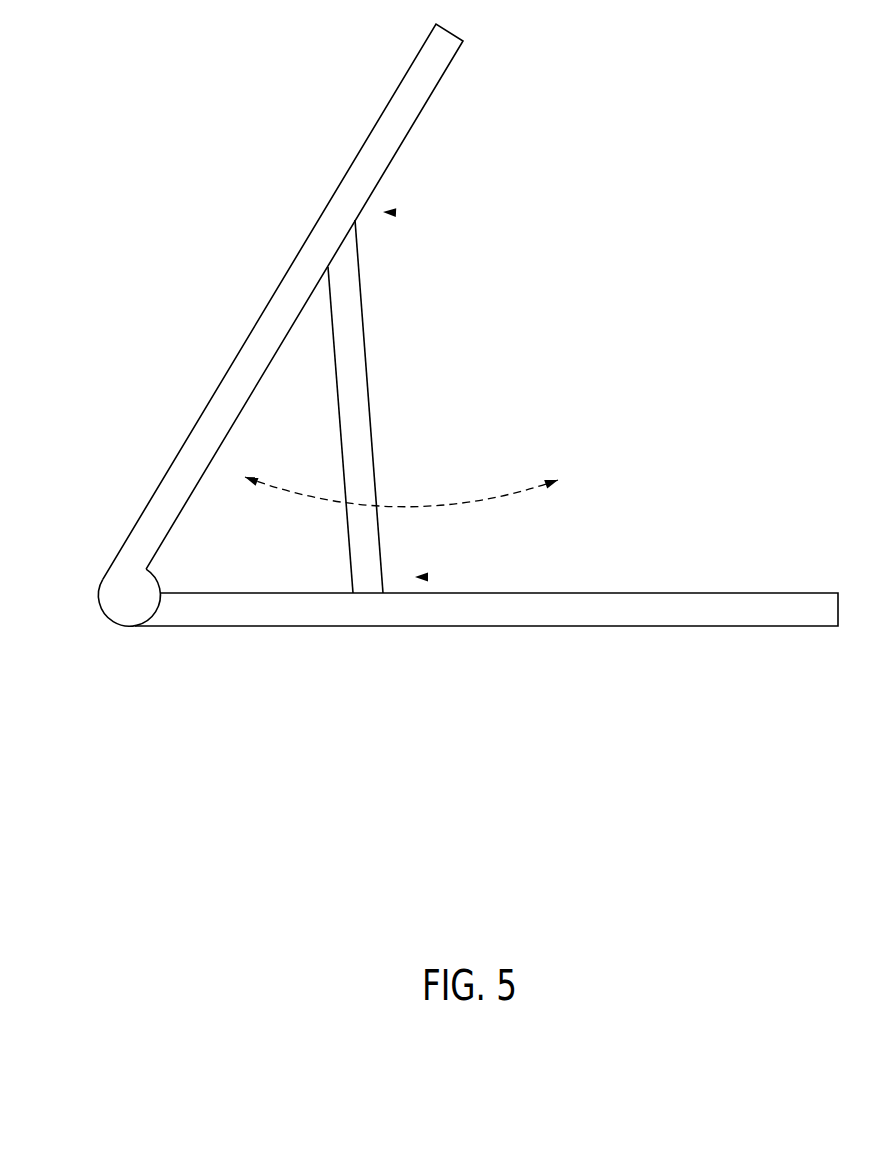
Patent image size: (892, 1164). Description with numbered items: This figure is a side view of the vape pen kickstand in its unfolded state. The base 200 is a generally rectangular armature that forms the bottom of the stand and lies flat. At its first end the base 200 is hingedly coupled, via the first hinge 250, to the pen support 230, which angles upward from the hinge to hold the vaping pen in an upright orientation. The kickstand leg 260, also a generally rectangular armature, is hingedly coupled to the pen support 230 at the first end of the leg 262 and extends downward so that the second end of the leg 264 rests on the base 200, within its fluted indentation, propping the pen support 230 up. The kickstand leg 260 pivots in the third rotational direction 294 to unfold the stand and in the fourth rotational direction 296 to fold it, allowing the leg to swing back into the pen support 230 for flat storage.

The base 200 is at (648, 610).
The pen support 230 is at (266, 300).
The first hinge 250 is at (122, 600).
The kickstand leg 260 is at (355, 390).
The first end of the leg 262 is at (388, 212).
The second end of the leg 264 is at (420, 577).
The third rotational direction 294 is at (418, 476).
The fourth rotational direction 296 is at (263, 465).